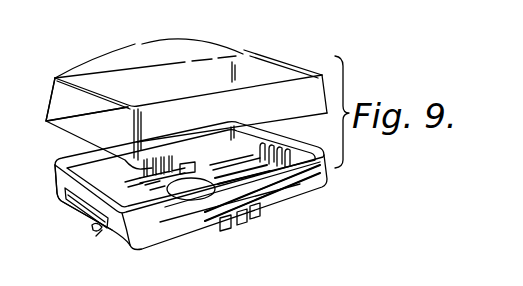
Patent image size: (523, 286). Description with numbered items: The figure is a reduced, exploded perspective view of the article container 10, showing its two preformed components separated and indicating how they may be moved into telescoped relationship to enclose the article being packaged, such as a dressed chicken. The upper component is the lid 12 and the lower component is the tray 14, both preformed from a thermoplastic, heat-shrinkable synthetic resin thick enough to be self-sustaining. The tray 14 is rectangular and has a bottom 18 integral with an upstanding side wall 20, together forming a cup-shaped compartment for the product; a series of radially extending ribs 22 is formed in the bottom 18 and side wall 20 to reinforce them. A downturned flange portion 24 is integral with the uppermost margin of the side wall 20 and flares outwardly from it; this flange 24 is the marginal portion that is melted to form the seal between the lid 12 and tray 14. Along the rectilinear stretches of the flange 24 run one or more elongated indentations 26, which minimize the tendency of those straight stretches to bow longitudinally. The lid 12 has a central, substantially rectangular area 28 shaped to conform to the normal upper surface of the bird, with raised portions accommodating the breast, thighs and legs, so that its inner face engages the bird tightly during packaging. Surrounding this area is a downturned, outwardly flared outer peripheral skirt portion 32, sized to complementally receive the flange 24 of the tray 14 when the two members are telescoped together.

The container 10 is at (350, 83).
The lid 12 is at (93, 57).
The tray 14 is at (203, 243).
The bottom 18 is at (110, 190).
The side wall 20 is at (68, 164).
The ribs 22 is at (292, 143).
The flange portion 24 is at (57, 183).
The elongated indentations 26 is at (102, 232).
The central area 28 is at (203, 50).
The skirt portion 32 is at (57, 100).